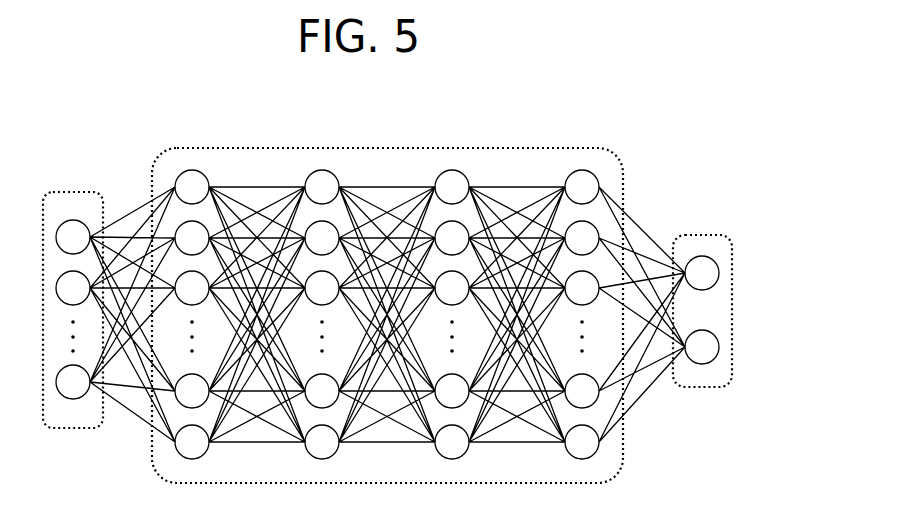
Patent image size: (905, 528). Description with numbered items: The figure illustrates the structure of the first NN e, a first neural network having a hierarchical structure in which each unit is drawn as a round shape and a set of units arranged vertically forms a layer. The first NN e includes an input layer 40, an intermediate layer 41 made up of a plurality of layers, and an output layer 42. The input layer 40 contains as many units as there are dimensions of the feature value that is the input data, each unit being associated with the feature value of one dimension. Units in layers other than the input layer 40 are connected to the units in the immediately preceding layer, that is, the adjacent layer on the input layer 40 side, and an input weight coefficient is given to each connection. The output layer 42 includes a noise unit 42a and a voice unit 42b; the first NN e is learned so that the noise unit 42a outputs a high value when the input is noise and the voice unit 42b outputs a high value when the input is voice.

The input layer 40 is at (72, 190).
The intermediate layer 41 is at (348, 148).
The output layer 42 is at (702, 233).
The noise unit 42a is at (720, 273).
The voice unit 42b is at (720, 347).
The first NN e is at (503, 122).